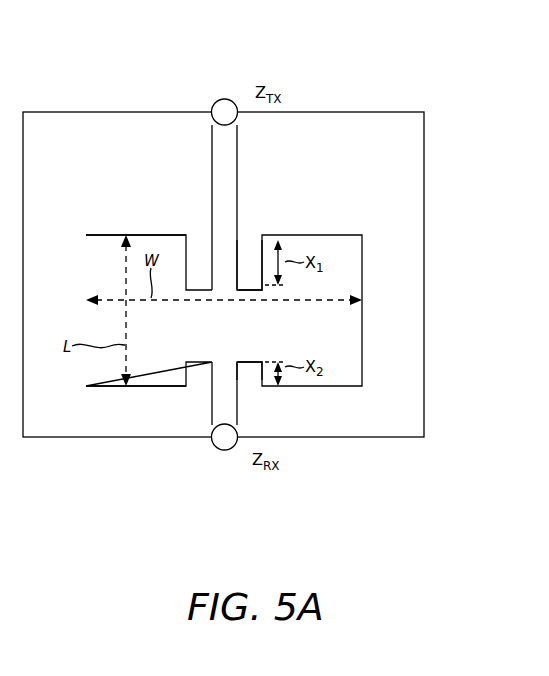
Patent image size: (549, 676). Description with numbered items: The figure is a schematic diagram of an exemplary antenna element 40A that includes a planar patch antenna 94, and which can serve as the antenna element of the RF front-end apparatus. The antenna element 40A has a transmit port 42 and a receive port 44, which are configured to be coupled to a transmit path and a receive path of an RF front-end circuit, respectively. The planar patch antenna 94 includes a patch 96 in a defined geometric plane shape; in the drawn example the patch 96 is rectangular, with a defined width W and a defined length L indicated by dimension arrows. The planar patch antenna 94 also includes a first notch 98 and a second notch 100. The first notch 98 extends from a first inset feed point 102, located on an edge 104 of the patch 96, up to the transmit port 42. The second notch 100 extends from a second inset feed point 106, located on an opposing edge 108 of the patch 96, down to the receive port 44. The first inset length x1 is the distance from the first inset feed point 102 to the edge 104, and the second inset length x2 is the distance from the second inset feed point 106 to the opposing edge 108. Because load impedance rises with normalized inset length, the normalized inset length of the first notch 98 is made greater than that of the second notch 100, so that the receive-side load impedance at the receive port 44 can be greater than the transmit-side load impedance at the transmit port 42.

The antenna element 40A is at (424, 130).
The transmit port 42 is at (225, 99).
The receive port 44 is at (224, 451).
The planar patch antenna 94 is at (95, 387).
The patch 96 is at (362, 248).
The first notch 98 is at (212, 177).
The second notch 100 is at (212, 410).
The first inset feed point 102 is at (243, 270).
The edge 104 is at (120, 233).
The second inset feed point 106 is at (242, 366).
The opposing edge 108 is at (140, 387).